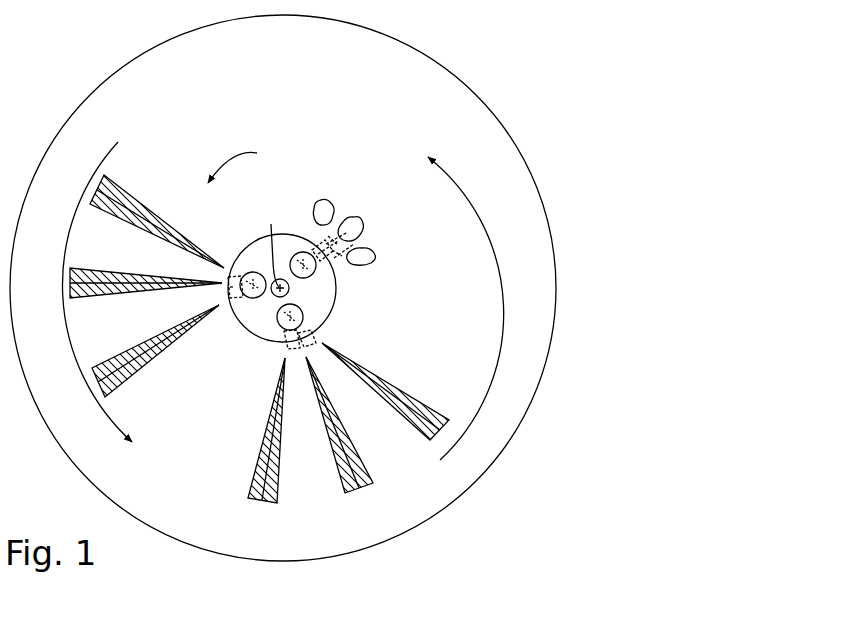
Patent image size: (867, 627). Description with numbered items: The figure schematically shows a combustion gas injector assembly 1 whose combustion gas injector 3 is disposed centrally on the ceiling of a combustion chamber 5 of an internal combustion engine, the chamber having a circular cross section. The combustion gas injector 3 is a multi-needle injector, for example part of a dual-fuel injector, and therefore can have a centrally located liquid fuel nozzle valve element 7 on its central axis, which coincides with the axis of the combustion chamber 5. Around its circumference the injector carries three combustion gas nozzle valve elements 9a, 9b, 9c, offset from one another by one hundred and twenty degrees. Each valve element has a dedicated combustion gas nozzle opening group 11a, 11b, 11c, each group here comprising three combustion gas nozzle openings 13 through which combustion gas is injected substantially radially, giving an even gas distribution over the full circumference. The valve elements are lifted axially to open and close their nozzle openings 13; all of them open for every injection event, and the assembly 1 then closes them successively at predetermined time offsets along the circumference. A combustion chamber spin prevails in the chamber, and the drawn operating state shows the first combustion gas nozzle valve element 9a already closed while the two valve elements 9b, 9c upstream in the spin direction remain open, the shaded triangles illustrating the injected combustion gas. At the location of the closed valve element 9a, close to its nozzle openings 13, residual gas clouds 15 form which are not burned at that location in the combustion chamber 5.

The combustion gas injector assembly 1 is at (353, 196).
The combustion gas injector 3 is at (258, 236).
The combustion chamber 5 is at (297, 91).
The liquid fuel nozzle valve element 7 is at (293, 297).
The combustion gas nozzle valve element 9a is at (309, 251).
The combustion gas nozzle valve element 9b is at (250, 294).
The combustion gas nozzle valve element 9c is at (305, 321).
The combustion gas nozzle opening group 11a is at (343, 249).
The combustion gas nozzle opening group 11b is at (208, 276).
The combustion gas nozzle opening group 11c is at (284, 357).
The combustion gas nozzle opening 13 is at (327, 262).
The residual gas cloud 15 is at (357, 227).